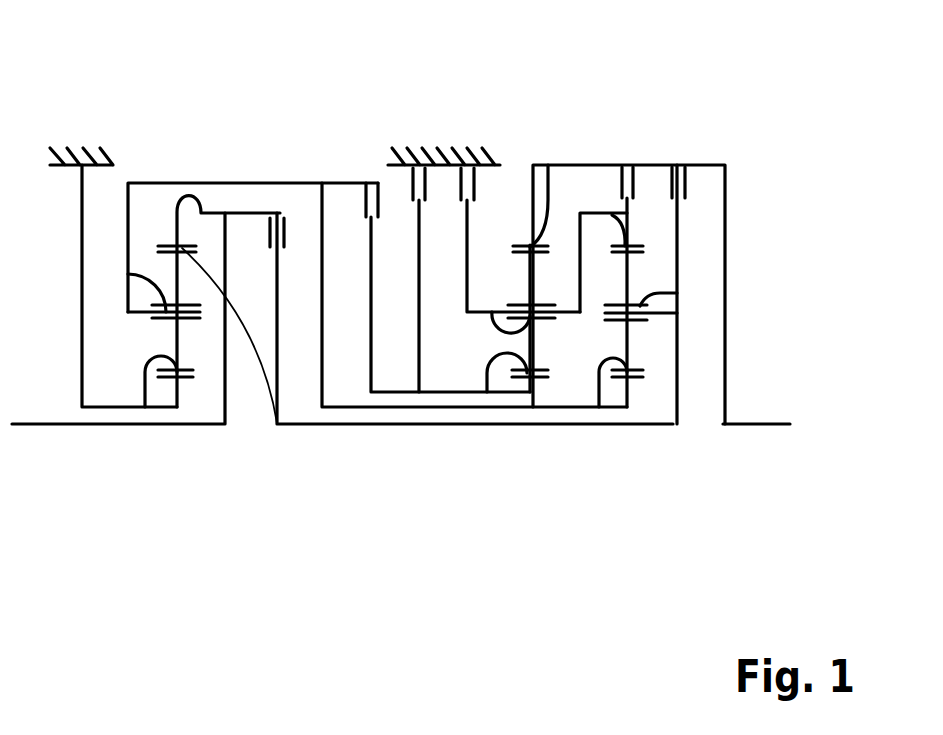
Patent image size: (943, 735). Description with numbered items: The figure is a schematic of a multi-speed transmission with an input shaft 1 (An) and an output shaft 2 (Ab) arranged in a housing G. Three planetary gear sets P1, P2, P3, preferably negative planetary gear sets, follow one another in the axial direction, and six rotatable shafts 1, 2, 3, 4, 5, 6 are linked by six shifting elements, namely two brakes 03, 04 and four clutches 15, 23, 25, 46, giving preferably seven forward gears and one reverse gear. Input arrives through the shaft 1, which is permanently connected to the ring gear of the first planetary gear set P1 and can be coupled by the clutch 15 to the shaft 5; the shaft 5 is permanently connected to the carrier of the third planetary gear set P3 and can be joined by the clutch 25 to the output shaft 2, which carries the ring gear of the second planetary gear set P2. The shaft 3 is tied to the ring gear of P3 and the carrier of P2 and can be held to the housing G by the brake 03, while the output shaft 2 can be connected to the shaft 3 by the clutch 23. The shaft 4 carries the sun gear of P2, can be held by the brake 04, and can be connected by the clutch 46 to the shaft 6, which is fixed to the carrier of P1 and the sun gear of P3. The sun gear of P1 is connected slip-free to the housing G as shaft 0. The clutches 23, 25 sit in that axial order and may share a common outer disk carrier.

The first planetary gear set P1 is at (162, 233).
The second planetary gear set P2 is at (523, 230).
The third planetary gear set P3 is at (666, 264).
The input An is at (47, 426).
The output Ab is at (760, 426).
The housing G is at (420, 162).
The input shaft 1 is at (277, 426).
The output shaft 2 is at (527, 250).
The shaft 3 is at (530, 352).
The shaft 4 is at (517, 375).
The shaft 5 is at (646, 320).
The shaft 6 is at (157, 318).
The shaft 0 is at (186, 377).
The clutch 15 is at (277, 213).
The clutch 46 is at (368, 210).
The brake 04 is at (413, 185).
The brake 03 is at (486, 170).
The clutch 23 is at (635, 193).
The clutch 25 is at (685, 193).